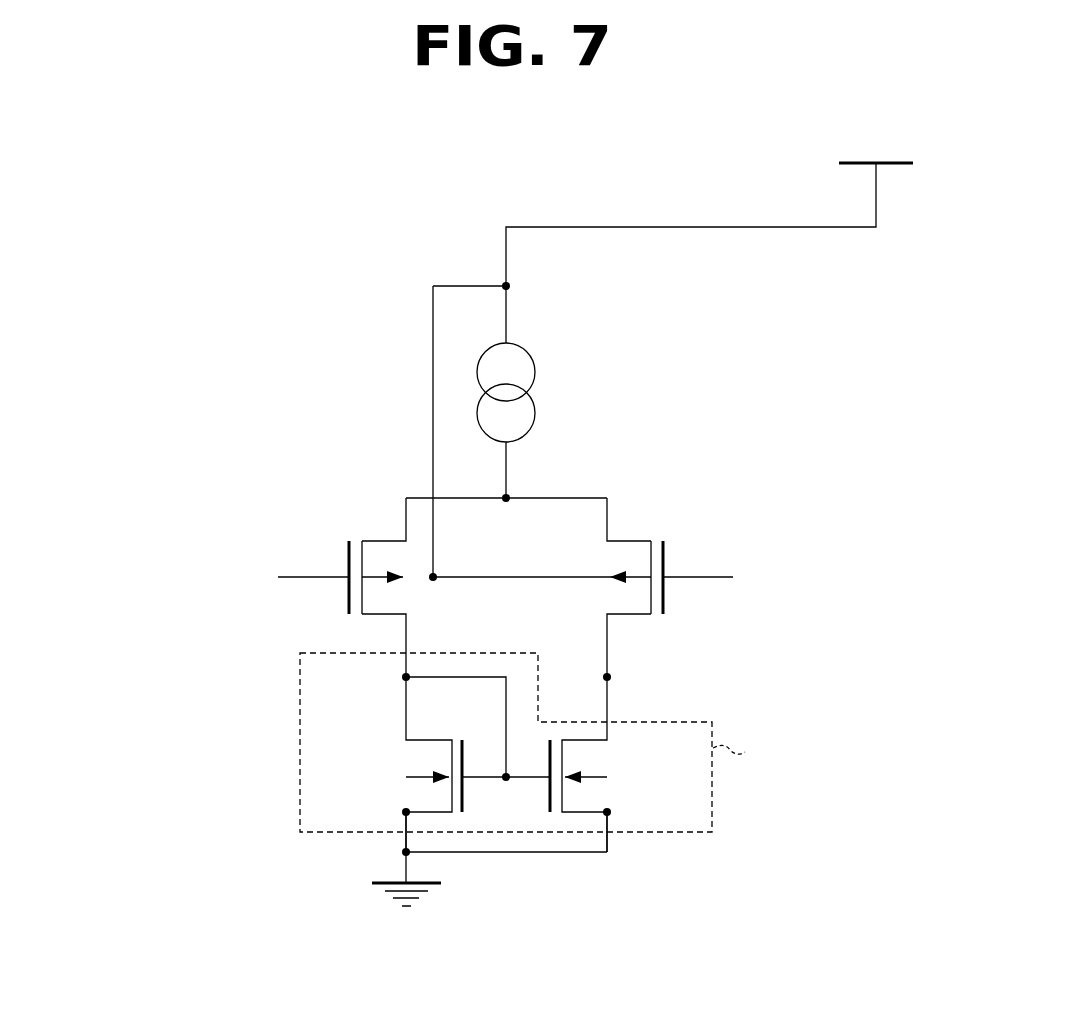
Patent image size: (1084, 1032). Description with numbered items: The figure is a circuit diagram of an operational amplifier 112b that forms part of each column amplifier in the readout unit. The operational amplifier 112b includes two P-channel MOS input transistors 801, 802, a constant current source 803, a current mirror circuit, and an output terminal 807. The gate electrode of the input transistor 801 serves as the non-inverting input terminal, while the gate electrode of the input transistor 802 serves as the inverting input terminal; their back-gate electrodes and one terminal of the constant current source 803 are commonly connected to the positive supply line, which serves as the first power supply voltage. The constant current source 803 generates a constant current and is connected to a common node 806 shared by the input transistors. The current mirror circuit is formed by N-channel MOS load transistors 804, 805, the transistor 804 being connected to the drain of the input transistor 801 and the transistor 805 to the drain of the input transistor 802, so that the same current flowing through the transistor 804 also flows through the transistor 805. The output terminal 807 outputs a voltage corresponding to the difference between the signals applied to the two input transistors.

The operational amplifier 112b is at (273, 935).
The input transistor 801 is at (349, 621).
The input transistor 802 is at (657, 620).
The constant current source 803 is at (535, 395).
The transistor 804 is at (398, 775).
The transistor 805 is at (615, 777).
The node 806 is at (435, 580).
The output terminal 807 is at (609, 680).